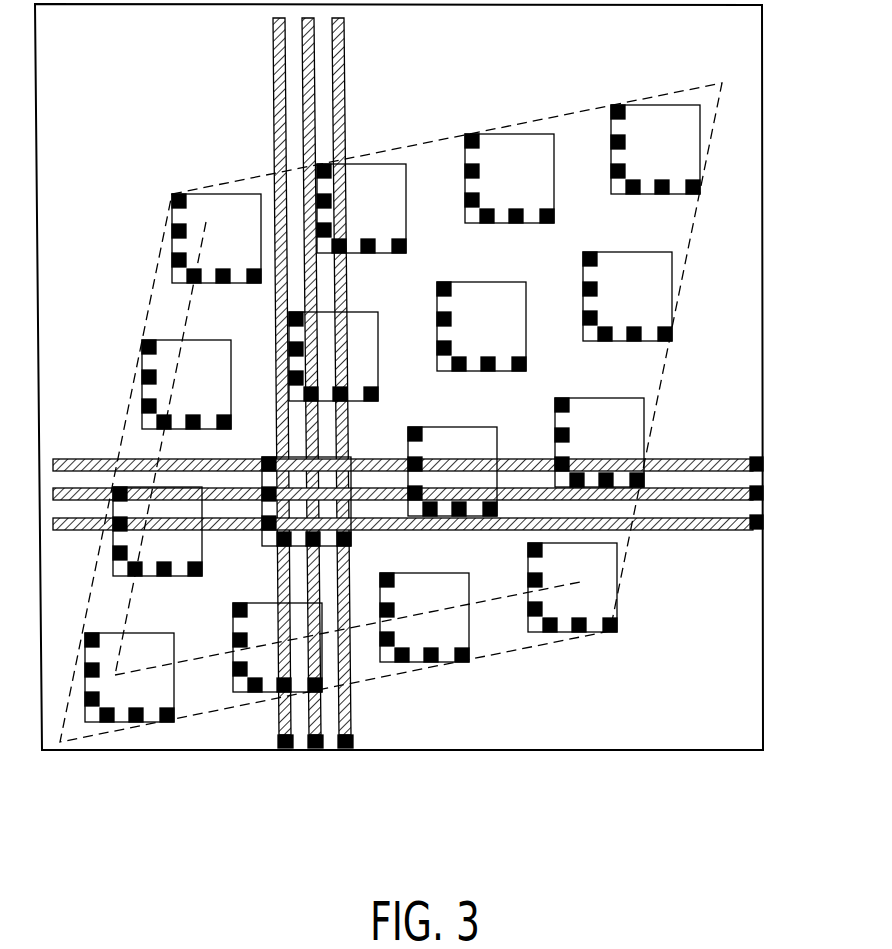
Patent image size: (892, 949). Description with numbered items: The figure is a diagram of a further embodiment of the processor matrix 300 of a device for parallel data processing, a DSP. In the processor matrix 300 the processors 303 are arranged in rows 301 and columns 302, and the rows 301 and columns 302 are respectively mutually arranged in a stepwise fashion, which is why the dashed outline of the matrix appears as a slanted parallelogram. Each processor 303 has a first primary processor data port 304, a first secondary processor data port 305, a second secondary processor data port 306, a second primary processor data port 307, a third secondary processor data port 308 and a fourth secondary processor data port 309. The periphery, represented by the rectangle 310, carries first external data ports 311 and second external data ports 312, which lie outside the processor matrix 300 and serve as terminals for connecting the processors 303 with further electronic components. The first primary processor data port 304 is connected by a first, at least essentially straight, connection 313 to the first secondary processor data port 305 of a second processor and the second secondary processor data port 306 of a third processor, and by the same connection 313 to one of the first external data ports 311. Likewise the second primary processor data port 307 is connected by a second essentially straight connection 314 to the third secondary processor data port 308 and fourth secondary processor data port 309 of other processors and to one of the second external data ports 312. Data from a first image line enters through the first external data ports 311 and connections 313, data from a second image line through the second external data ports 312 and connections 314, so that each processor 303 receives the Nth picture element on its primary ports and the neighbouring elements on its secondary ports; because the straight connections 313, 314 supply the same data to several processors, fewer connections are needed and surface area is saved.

The processor matrix 300 is at (583, 130).
The rows 301 is at (503, 598).
The columns 302 is at (188, 311).
The processors 303 is at (450, 385).
The first primary processor data port 304 is at (663, 194).
The first secondary processor data port 305 is at (636, 196).
The second secondary processor data port 306 is at (703, 186).
The second primary processor data port 307 is at (626, 142).
The third secondary processor data port 308 is at (612, 168).
The fourth secondary processor data port 309 is at (617, 104).
The periphery 310 is at (767, 692).
The first external data ports 311 is at (345, 750).
The second external data ports 312 is at (765, 463).
The first connection 313 is at (318, 712).
The second connection 314 is at (683, 471).